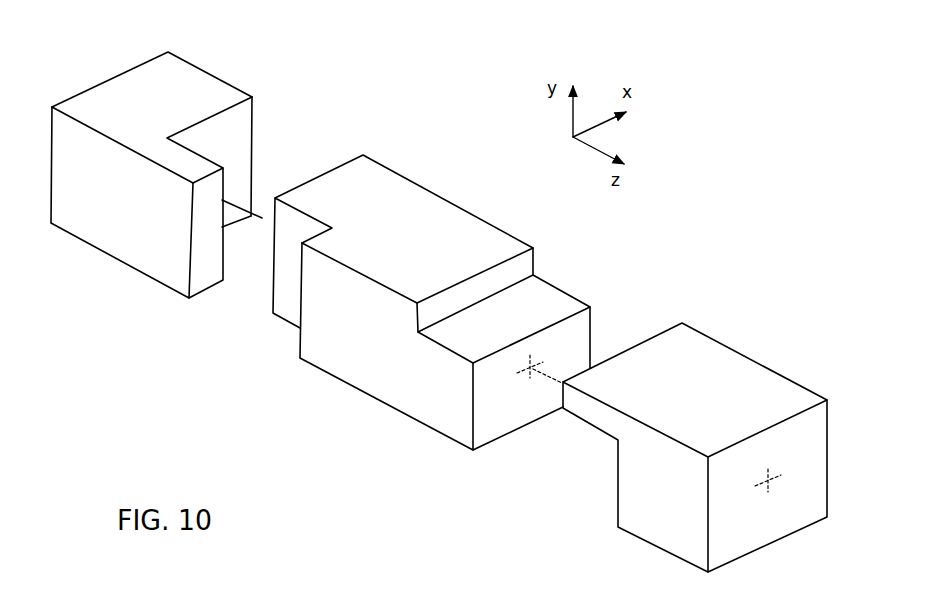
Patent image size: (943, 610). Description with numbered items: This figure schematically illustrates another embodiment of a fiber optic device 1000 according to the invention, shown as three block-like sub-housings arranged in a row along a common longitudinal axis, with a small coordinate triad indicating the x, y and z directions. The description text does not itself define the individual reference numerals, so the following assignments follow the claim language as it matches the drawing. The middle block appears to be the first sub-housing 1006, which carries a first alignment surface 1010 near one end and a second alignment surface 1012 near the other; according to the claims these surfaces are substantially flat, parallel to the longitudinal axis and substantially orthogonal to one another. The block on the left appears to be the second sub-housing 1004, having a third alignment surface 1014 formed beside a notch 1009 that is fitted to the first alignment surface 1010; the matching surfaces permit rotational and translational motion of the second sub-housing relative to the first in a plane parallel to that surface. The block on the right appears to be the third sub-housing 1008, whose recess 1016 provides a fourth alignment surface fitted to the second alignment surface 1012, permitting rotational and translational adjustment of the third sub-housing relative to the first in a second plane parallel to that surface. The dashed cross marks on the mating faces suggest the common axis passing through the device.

The interlocking block assembly 1000 is at (221, 423).
The first block 1004 is at (190, 70).
The second block 1006 is at (418, 182).
The third block 1008 is at (722, 343).
The notch of first block 1009 is at (259, 215).
The tongue of second block 1010 is at (278, 300).
The step of second block 1012 is at (550, 293).
The mating face of first block 1014 is at (229, 265).
The recess of third block 1016 is at (600, 432).